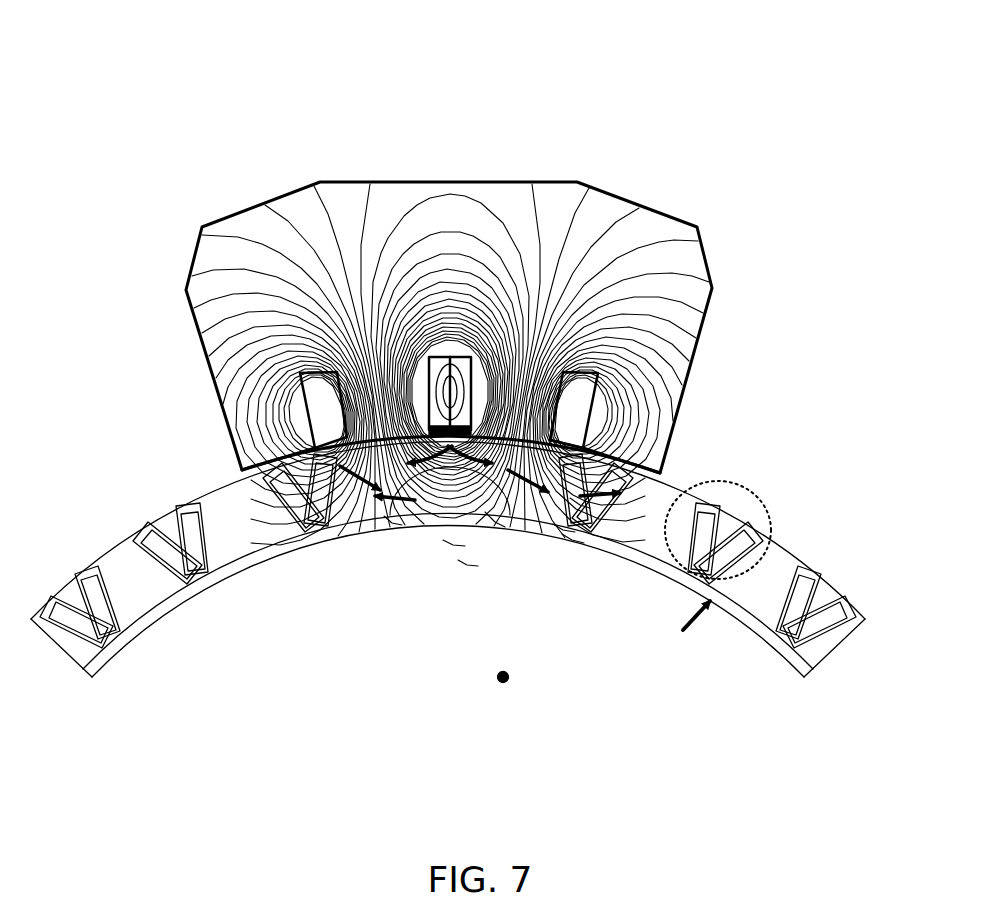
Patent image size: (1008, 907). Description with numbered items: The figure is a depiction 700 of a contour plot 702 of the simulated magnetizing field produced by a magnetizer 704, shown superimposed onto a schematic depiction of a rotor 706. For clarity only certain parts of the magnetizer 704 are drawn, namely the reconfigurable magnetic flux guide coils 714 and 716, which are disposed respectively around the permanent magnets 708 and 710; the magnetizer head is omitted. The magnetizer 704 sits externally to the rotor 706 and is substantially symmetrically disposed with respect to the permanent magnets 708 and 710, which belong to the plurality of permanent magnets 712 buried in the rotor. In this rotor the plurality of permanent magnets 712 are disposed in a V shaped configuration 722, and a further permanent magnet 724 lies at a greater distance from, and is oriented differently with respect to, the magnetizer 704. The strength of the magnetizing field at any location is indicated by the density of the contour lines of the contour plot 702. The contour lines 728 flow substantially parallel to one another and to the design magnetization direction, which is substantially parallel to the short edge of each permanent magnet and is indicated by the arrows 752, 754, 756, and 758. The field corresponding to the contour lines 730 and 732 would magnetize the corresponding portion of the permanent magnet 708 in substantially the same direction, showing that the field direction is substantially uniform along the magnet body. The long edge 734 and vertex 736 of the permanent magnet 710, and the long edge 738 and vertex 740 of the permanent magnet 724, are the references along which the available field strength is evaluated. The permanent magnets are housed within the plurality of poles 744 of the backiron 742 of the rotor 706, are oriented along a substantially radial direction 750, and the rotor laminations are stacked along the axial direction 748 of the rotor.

The depiction 700 is at (712, 60).
The contour plot 702 is at (683, 277).
The magnetizer 704 is at (565, 182).
The rotor 706 is at (774, 674).
The permanent magnet 708 is at (418, 515).
The permanent magnet 710 is at (495, 522).
The plurality of permanent magnets 712 is at (722, 560).
The reconfigurable magnetic flux guide coil 714 is at (318, 410).
The reconfigurable magnetic flux guide coil 716 is at (553, 430).
The V shaped configuration 722 is at (757, 507).
The permanent magnet 724 is at (563, 530).
The contour lines 728 is at (462, 393).
The contour line 730 is at (467, 565).
The contour line 732 is at (453, 545).
The long edge 734 is at (392, 523).
The vertex 736 is at (430, 428).
The long edge 738 is at (580, 505).
The vertex 740 is at (240, 470).
The backiron 742 is at (88, 651).
The plurality of poles 744 is at (812, 583).
The axial direction 748 is at (510, 681).
The radial direction 750 is at (690, 626).
The arrow 752 is at (337, 372).
The arrow 754 is at (472, 378).
The arrow 756 is at (572, 540).
The arrow 758 is at (663, 478).